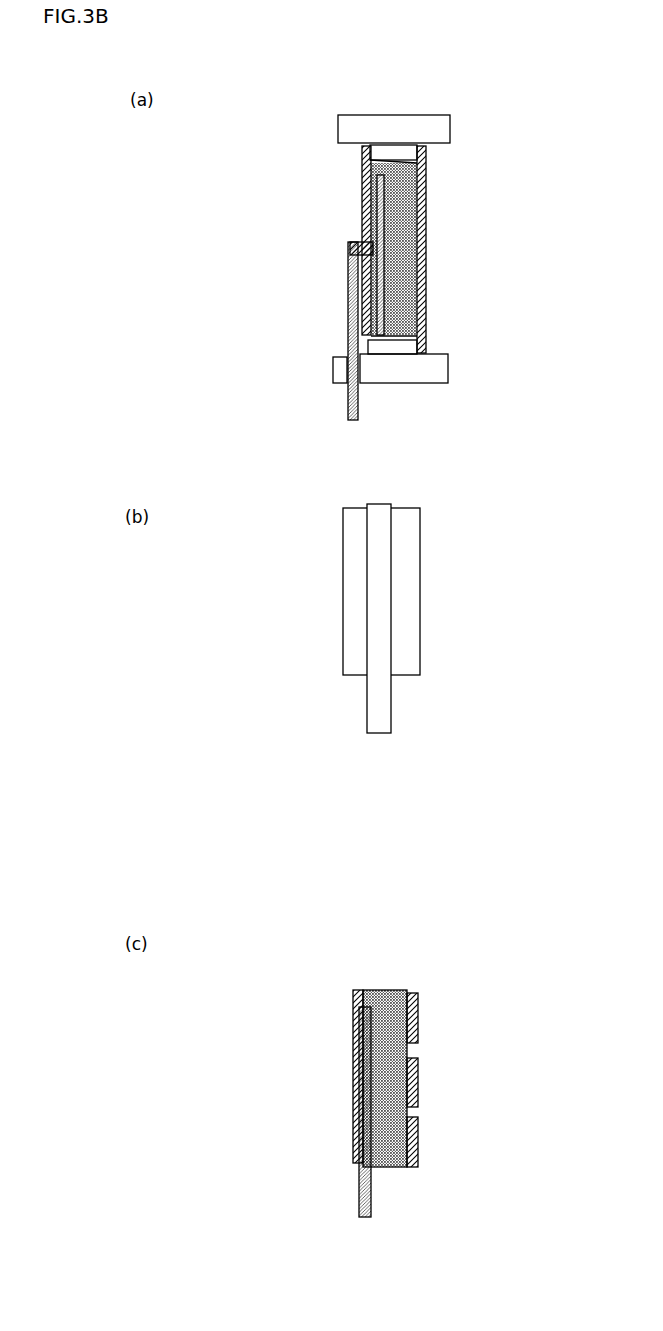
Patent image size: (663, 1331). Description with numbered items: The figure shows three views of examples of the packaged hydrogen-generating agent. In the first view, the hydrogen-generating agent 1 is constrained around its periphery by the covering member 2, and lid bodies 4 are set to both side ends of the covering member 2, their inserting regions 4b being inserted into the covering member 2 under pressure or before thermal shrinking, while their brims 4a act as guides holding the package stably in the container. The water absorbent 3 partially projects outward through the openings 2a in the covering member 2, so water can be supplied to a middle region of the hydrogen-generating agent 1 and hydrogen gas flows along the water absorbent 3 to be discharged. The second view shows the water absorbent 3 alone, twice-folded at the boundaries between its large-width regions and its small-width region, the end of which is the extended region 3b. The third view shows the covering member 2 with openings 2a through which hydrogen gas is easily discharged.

The hydrogen-generating agent 1 is at (403, 183).
The covering member 2 is at (362, 195).
The openings 2a is at (360, 242).
The water absorbent 3 is at (342, 327).
The extended region 3b is at (348, 400).
The lid bodies 4 is at (458, 122).
The brims 4a is at (427, 115).
The inserting regions 4b is at (393, 150).